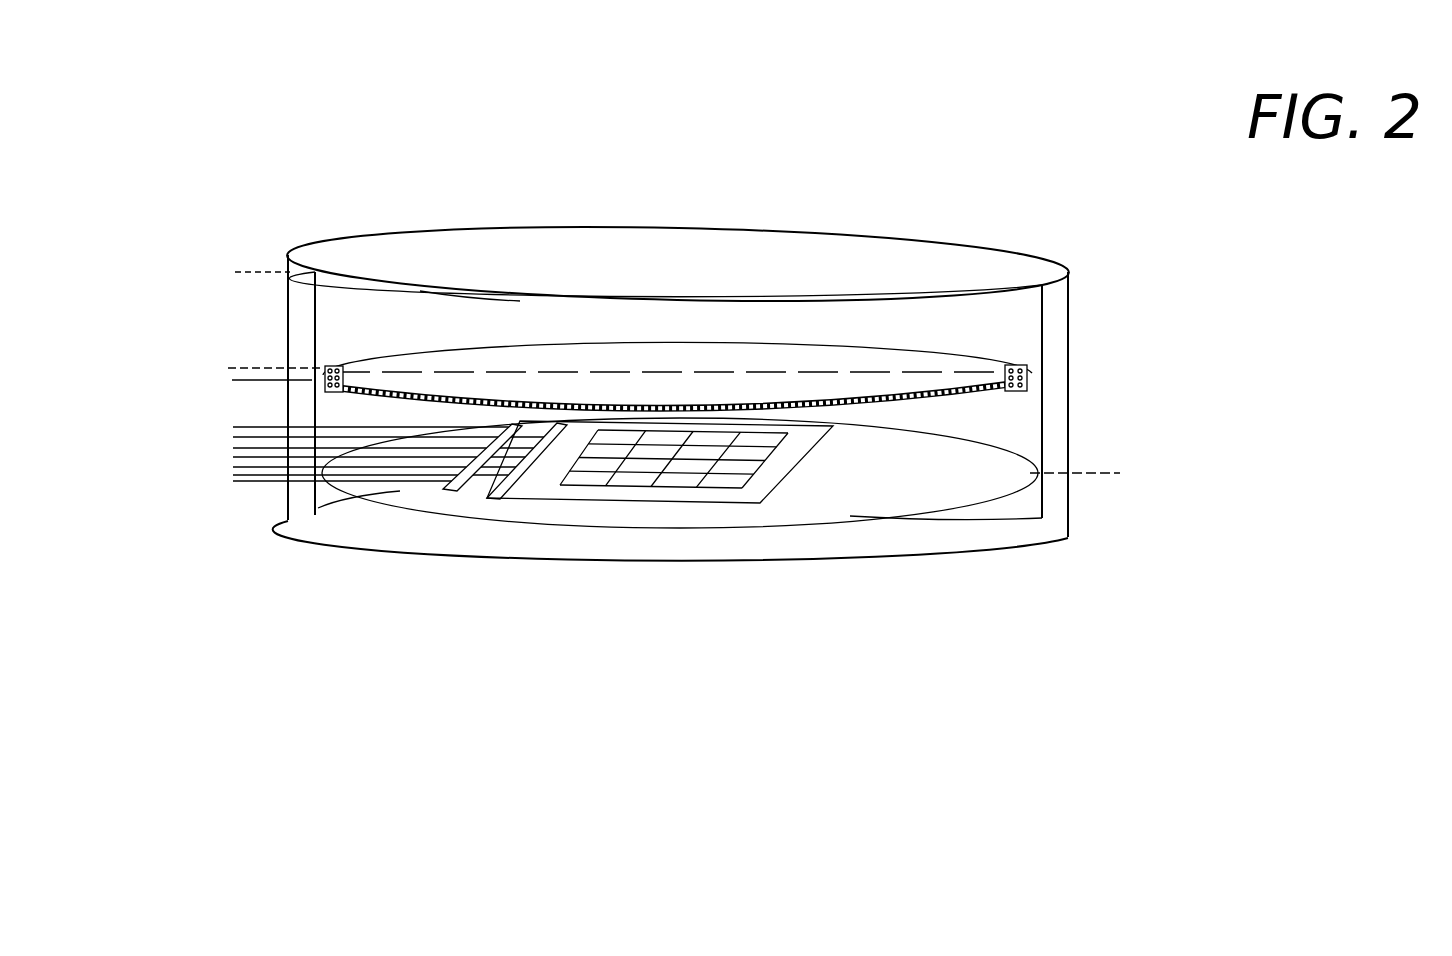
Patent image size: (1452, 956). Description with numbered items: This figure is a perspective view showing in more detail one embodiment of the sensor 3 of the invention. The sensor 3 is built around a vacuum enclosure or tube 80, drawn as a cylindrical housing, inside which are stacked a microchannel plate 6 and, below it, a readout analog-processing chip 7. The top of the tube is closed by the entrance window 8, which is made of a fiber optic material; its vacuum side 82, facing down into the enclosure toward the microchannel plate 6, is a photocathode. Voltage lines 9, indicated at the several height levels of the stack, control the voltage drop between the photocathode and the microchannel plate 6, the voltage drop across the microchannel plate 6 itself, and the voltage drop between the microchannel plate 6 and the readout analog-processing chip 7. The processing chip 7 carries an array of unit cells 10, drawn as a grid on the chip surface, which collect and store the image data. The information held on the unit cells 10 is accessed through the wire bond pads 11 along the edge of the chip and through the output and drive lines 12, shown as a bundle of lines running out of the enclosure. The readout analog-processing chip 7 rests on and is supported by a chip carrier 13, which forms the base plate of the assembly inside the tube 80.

The sensor 3 is at (1075, 330).
The microchannel plate 6 is at (845, 338).
The readout analog-processing chip 7 is at (736, 510).
The entrance window 8 is at (645, 268).
The voltage lines 9 is at (268, 380).
The unit cells 10 is at (638, 479).
The wire bond pads 11 is at (470, 482).
The output and drive lines 12 is at (259, 485).
The chip carrier 13 is at (903, 508).
The vacuum enclosure or tube 80 is at (1075, 375).
The vacuum side 82 is at (480, 301).